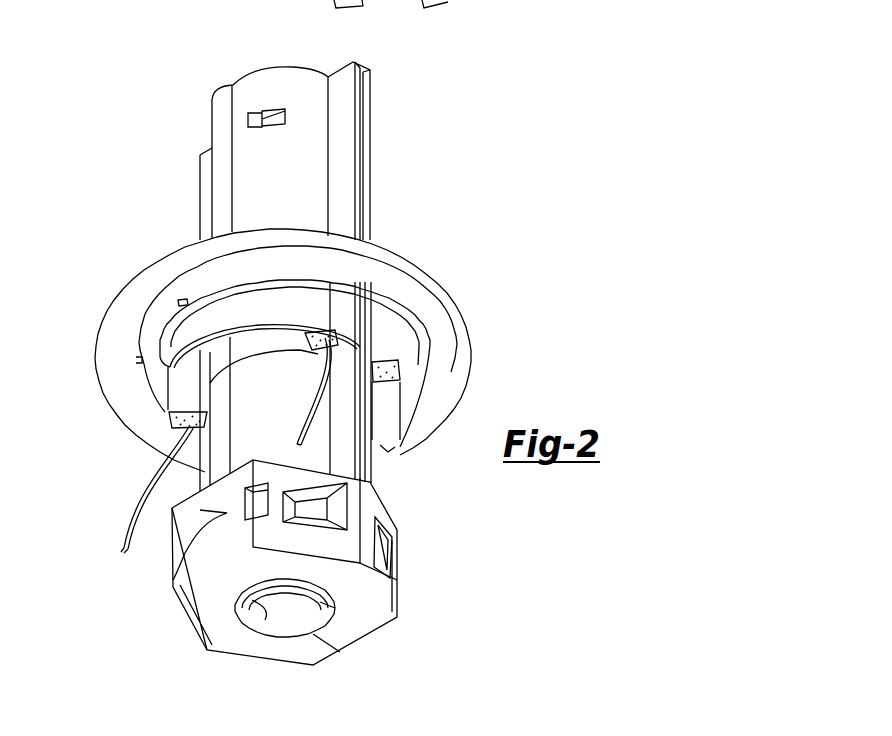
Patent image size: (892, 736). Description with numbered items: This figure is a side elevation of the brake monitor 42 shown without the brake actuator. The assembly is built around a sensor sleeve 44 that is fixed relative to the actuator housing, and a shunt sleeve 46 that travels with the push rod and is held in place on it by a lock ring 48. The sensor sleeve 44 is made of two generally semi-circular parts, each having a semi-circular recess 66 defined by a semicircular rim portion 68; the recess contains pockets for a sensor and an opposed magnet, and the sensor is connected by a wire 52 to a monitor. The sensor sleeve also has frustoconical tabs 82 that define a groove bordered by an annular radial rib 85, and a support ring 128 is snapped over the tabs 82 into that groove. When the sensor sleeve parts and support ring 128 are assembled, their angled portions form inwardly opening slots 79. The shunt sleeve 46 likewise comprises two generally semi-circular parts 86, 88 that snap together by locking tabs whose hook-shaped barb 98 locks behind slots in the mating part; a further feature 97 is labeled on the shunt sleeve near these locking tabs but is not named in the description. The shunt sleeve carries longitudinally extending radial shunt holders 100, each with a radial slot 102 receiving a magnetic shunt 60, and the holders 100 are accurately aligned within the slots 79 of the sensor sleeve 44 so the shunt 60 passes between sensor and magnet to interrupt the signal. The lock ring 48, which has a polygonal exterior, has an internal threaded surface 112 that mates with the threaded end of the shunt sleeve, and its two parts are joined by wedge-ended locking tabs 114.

The brake monitor 42 is at (390, 186).
The sensor sleeve 44 is at (393, 340).
The shunt sleeve 46 is at (278, 80).
The lock ring 48 is at (394, 592).
The wire 52 is at (300, 414).
The magnetic shunt 60 is at (363, 82).
The semi-circular recess 66 is at (182, 386).
The semicircular rim portion 68 is at (318, 346).
The inwardly opening slots 79 is at (358, 320).
The frustoconical tabs 82 is at (183, 300).
The annular radial rib 85 is at (168, 318).
The generally semi-circular part 86 is at (390, 119).
The generally semi-circular part 88 is at (175, 188).
The locating feature 97 is at (284, 112).
The hook-shaped barb 98 is at (240, 82).
The radial shunt holders 100 is at (372, 147).
The longitudinally extending radial slot 102 is at (383, 452).
The internal threaded surface 112 is at (207, 647).
The locking tabs 114 is at (173, 572).
The support ring 128 is at (470, 360).